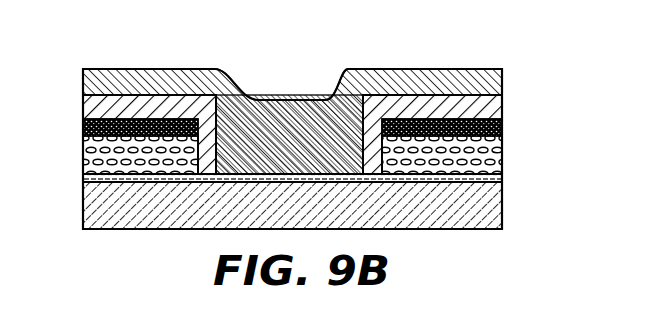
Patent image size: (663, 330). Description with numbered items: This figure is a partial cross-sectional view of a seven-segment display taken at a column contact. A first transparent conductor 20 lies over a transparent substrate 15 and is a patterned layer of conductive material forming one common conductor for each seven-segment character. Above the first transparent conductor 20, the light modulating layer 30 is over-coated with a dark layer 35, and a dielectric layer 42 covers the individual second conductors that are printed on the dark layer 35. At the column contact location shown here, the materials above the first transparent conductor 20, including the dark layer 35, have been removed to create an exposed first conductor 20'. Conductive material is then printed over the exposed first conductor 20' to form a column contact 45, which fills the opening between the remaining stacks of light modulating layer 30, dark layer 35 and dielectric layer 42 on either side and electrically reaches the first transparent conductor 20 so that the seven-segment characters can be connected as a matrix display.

The transparent substrate 15 is at (502, 207).
The first transparent conductor 20 is at (329, 191).
The exposed first conductor 20' is at (289, 104).
The light modulating layer 30 is at (502, 158).
The dark layer 35 is at (502, 127).
The dielectric layer 42 is at (502, 108).
The column contact 45 is at (502, 81).